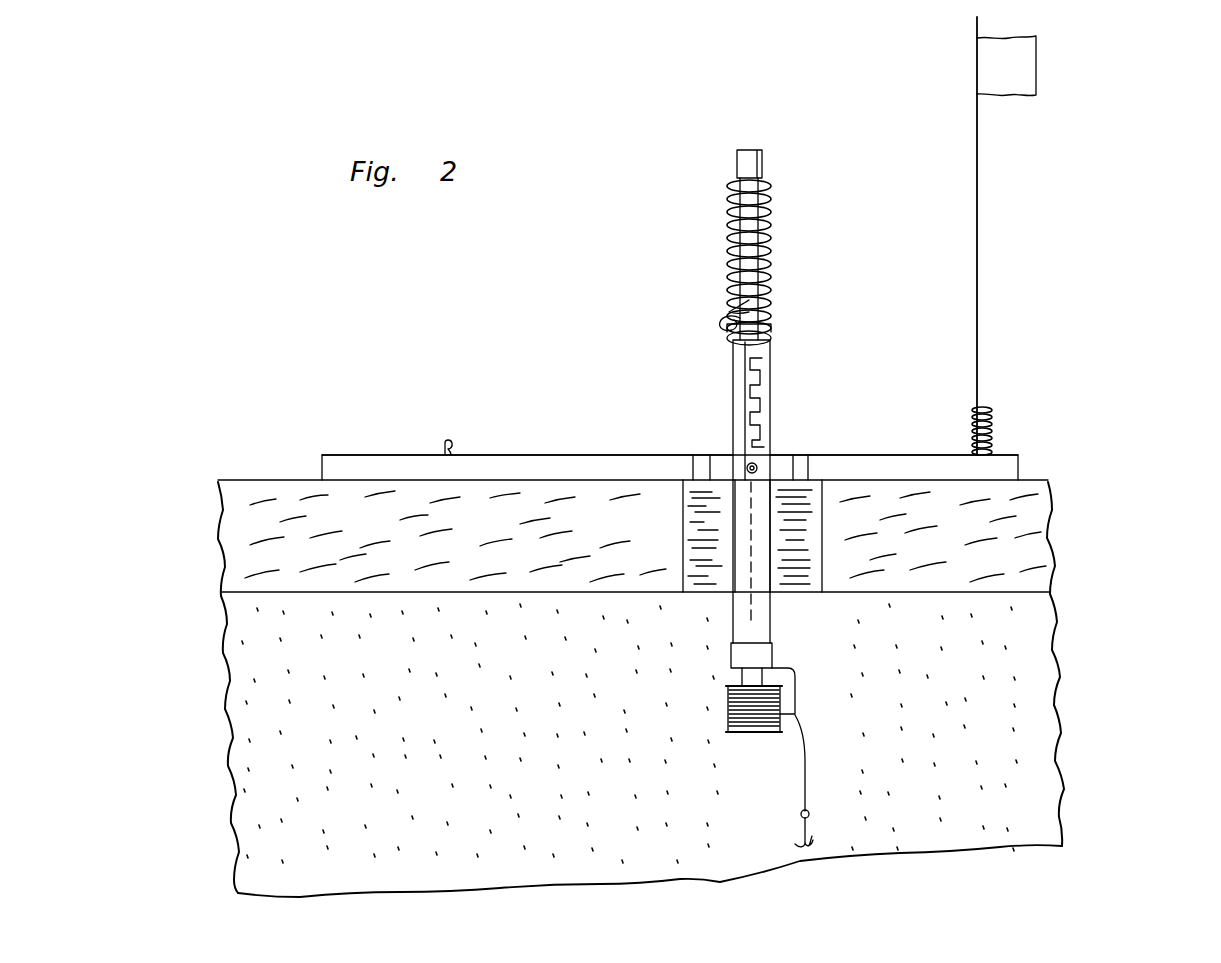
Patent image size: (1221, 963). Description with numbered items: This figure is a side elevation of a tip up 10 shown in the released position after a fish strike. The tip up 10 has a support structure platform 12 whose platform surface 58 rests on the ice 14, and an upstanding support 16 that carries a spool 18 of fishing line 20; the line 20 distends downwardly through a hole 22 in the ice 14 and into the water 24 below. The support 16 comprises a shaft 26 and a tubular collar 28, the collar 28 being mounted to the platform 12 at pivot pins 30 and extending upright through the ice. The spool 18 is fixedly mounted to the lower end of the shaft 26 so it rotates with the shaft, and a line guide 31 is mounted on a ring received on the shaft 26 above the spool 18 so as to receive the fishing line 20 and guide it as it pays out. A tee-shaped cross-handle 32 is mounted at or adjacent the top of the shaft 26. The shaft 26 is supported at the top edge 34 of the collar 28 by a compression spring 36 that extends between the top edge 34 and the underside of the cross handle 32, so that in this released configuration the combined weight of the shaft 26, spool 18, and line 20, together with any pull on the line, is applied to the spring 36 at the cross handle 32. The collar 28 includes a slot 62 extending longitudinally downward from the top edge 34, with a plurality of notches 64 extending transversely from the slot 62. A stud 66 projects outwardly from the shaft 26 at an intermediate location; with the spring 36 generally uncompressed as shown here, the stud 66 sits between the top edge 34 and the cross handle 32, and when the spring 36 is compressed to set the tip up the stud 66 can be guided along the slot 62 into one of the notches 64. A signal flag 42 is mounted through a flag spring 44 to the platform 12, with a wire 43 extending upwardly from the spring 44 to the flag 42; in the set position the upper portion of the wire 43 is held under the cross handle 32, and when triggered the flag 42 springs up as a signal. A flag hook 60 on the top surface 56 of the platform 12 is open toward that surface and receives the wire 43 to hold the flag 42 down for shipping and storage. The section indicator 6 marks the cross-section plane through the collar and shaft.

The section line 6- 6 is at (750, 360).
The tip up 10 is at (1138, 219).
The support structure platform 12 is at (375, 443).
The ice 14 is at (1049, 494).
The upstanding support 16 is at (788, 562).
The spool 18 is at (740, 732).
The fishing line 20 is at (812, 764).
The hole 22 is at (717, 578).
The water 24 is at (1042, 768).
The shaft 26 is at (770, 240).
The collar 28 is at (736, 518).
The pivot pins 30 is at (758, 468).
The line guide 31 is at (796, 686).
The tee-shaped cross-handle 32 is at (747, 138).
The top edge 34 is at (770, 330).
The compression spring 36 is at (758, 300).
The signal flag 42 is at (1043, 73).
The wire 43 is at (978, 262).
The flag spring 44 is at (995, 438).
The top surface 56 is at (614, 455).
The platform surface 58 is at (569, 482).
The flag hook 60 is at (448, 442).
The slot 62 is at (736, 436).
The notches 64 is at (760, 420).
The stud 66 is at (738, 320).